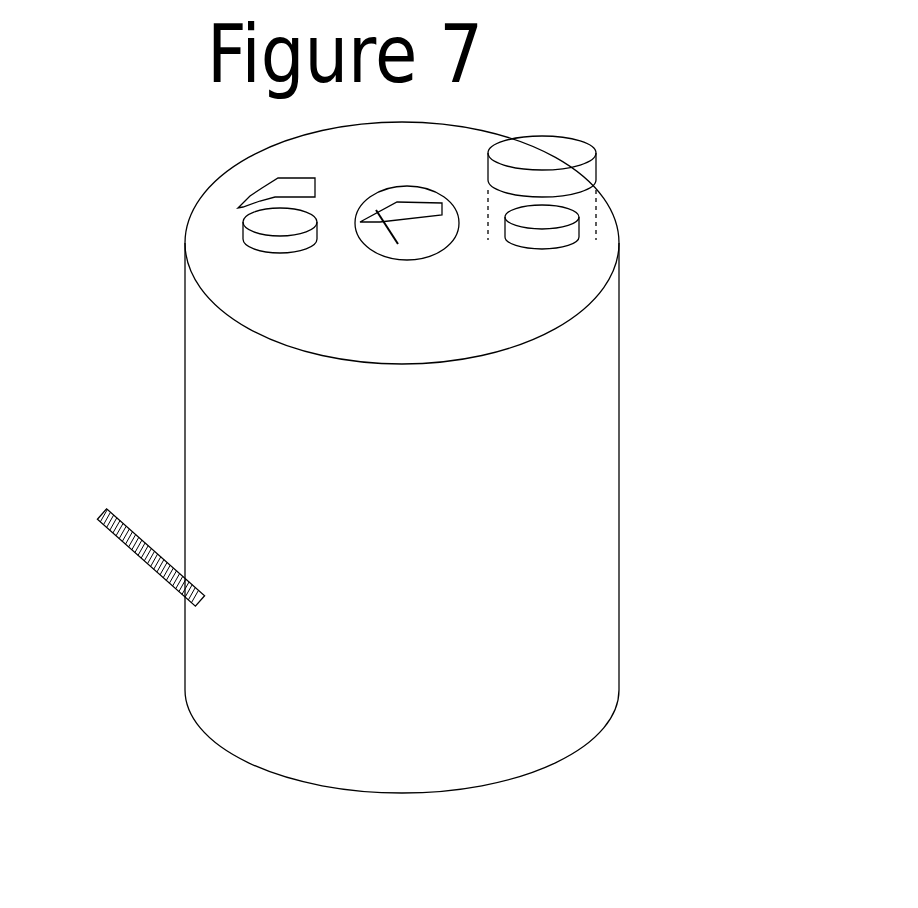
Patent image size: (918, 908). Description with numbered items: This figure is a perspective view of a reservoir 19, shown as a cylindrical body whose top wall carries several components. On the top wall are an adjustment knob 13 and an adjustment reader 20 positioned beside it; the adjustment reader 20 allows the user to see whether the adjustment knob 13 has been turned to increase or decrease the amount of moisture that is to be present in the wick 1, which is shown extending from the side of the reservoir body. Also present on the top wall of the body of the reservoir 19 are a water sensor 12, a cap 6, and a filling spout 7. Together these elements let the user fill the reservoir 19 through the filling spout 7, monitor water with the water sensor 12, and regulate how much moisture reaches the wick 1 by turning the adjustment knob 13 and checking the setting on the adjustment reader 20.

The wick 1 is at (120, 547).
The cap 6 is at (553, 150).
The filling spout 7 is at (555, 217).
The water sensor 12 is at (410, 203).
The adjustment knob 13 is at (270, 227).
The reservoir 19 is at (537, 511).
The adjustment reader 20 is at (262, 188).